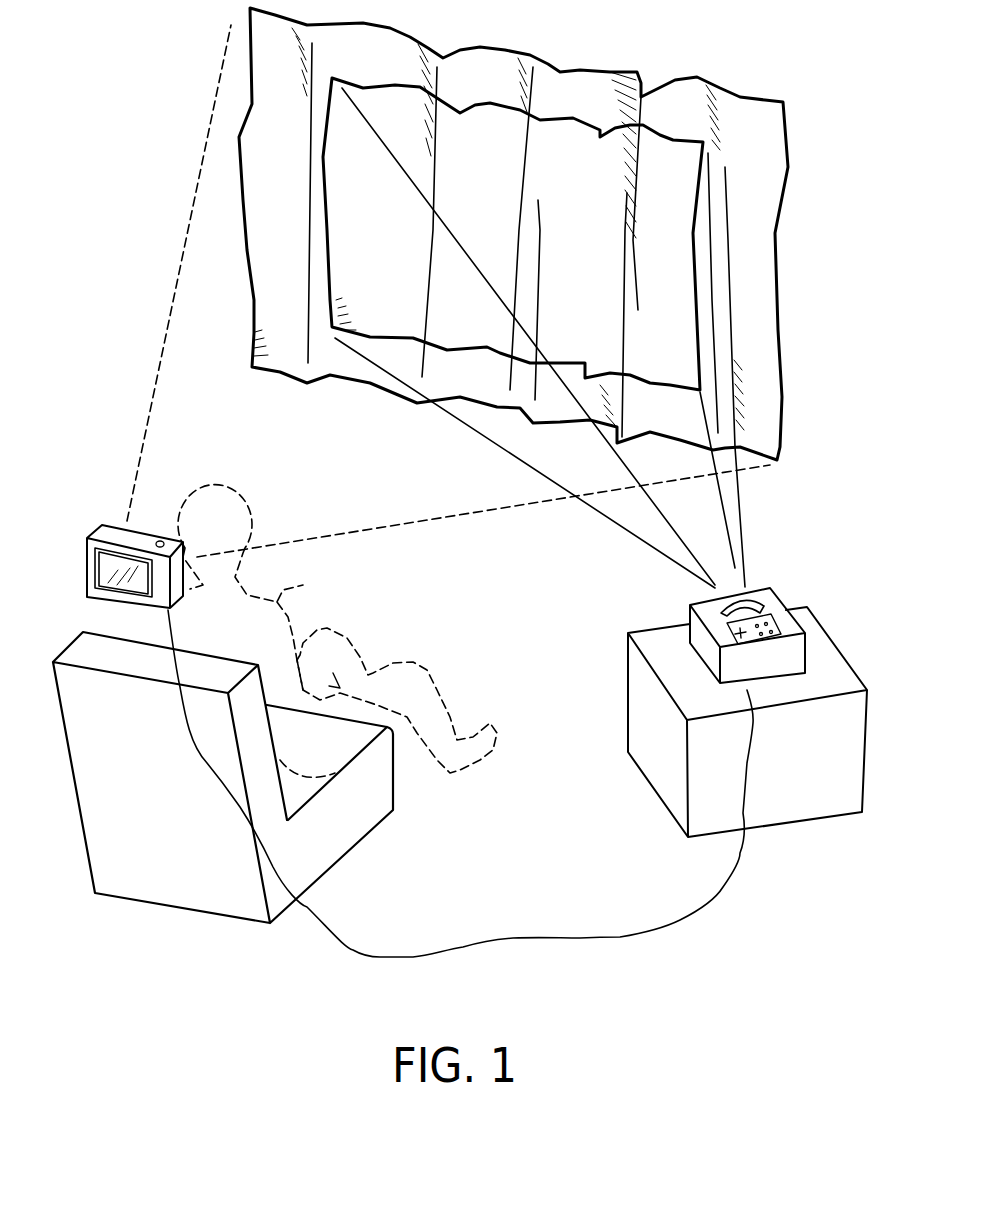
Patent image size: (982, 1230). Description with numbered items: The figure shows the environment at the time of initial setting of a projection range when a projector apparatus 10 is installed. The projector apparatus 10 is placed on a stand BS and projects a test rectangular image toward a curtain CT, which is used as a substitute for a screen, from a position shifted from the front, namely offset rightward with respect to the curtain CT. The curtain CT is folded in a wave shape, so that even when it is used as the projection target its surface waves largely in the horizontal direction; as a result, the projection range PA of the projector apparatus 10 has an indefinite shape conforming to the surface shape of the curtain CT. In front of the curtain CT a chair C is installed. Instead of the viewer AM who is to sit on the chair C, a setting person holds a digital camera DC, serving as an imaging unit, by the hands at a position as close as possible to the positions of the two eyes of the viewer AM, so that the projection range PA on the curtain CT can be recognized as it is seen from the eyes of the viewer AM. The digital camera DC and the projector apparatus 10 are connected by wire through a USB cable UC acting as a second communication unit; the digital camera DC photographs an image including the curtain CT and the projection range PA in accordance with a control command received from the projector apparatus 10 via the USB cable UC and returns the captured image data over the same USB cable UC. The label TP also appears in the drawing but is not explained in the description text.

The curtain CT is at (762, 97).
The projection range PA is at (673, 137).
The projector apparatus 10 is at (770, 587).
The stand BS is at (833, 643).
The digital camera DC is at (97, 535).
The viewer AM is at (303, 585).
The chair C is at (345, 828).
The USB cable UC is at (583, 937).
The top plate of chair TP is at (105, 802).